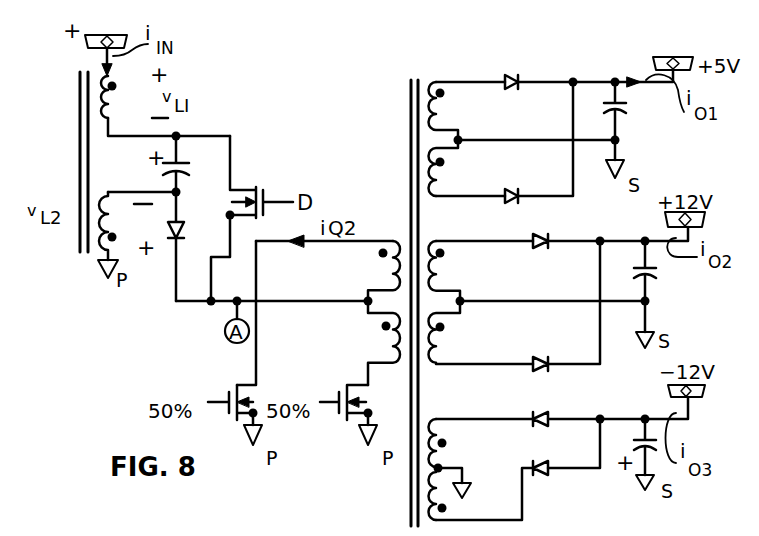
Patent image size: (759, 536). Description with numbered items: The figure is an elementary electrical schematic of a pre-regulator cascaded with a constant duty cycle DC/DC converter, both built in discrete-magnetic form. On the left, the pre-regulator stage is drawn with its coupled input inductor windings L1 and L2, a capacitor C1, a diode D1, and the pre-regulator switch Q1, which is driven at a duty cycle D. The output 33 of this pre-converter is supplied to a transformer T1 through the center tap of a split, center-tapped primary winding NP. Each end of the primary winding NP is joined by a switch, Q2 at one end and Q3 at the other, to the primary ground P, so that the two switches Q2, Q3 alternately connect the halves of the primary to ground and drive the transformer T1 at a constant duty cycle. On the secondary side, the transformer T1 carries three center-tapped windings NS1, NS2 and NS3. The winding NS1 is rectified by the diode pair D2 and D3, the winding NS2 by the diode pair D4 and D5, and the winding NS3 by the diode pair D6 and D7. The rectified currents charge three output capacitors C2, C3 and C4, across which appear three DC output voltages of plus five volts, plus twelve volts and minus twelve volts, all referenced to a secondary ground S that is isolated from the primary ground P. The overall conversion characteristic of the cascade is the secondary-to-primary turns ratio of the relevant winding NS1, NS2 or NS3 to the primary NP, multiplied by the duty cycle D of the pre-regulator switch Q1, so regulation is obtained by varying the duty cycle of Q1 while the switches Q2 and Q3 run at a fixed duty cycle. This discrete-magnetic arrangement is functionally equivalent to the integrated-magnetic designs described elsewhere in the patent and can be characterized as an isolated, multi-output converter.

The output of the pre-converter 33 is at (287, 302).
The input inductor winding L1 is at (123, 97).
The coupled inductor winding L2 is at (121, 226).
The pre-regulator capacitor C1 is at (155, 164).
The pre-regulator diode D1 is at (191, 246).
The pre-regulator switch Q1 is at (252, 218).
The primary switch Q2 is at (235, 403).
The primary switch Q3 is at (348, 404).
The transformer T1 is at (409, 290).
The primary winding NP is at (374, 313).
The first secondary winding NS1 is at (458, 139).
The second secondary winding NS2 is at (494, 302).
The third secondary winding NS3 is at (472, 469).
The rectifier diode D2 is at (530, 71).
The rectifier diode D3 is at (530, 188).
The rectifier diode D4 is at (559, 231).
The rectifier diode D5 is at (558, 374).
The rectifier diode D6 is at (558, 428).
The rectifier diode D7 is at (558, 480).
The output capacitor C2 is at (632, 121).
The output capacitor C3 is at (662, 286).
The output capacitor C4 is at (669, 447).